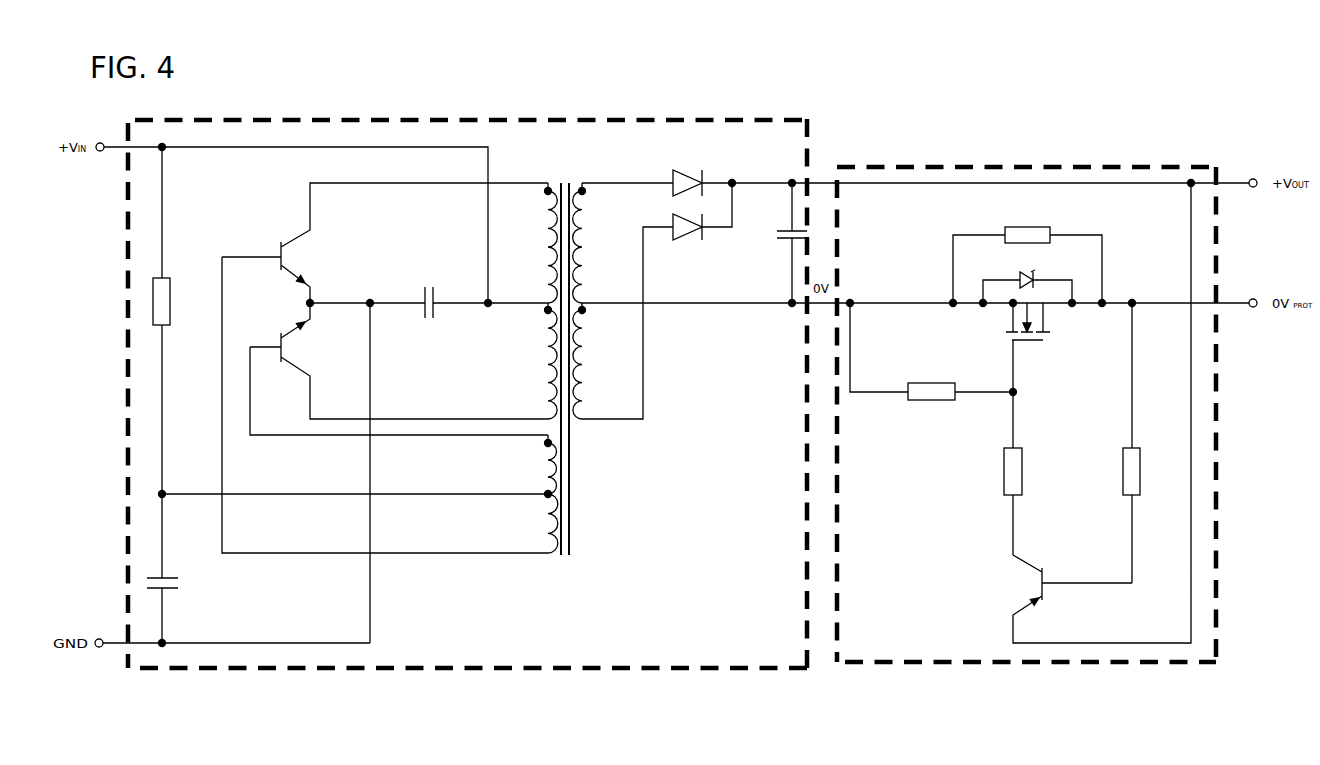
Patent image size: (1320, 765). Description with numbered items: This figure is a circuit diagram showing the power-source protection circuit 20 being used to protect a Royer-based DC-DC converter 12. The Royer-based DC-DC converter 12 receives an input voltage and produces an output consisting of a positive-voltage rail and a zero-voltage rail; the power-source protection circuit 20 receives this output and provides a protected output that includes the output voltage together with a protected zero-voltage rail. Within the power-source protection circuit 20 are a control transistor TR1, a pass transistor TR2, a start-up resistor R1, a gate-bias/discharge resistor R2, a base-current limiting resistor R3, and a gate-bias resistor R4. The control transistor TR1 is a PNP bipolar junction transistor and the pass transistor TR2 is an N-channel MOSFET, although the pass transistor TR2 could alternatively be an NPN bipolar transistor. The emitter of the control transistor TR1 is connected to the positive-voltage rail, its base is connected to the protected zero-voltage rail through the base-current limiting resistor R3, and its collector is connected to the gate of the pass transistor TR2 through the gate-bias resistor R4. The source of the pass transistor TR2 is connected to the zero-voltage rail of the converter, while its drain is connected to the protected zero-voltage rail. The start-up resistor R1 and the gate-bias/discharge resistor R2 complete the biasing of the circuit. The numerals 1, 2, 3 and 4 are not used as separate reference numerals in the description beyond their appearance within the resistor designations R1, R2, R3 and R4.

The Royer-based DC-DC converter 12 is at (455, 414).
The power-source protection circuit 20 is at (1026, 436).
The resistor R1 1 is at (1027, 255).
The resistor R2 2 is at (931, 351).
The resistor R3 3 is at (1120, 443).
The resistor R4 4 is at (1002, 501).
The start-up resistor R1 is at (1027, 255).
The gate-bias/discharge resistor R2 is at (931, 351).
The base-current limiting resistor R3 is at (1120, 443).
The gate-bias resistor R4 is at (1002, 501).
The control transistor TR1 is at (1091, 413).
The pass transistor TR2 is at (1009, 375).